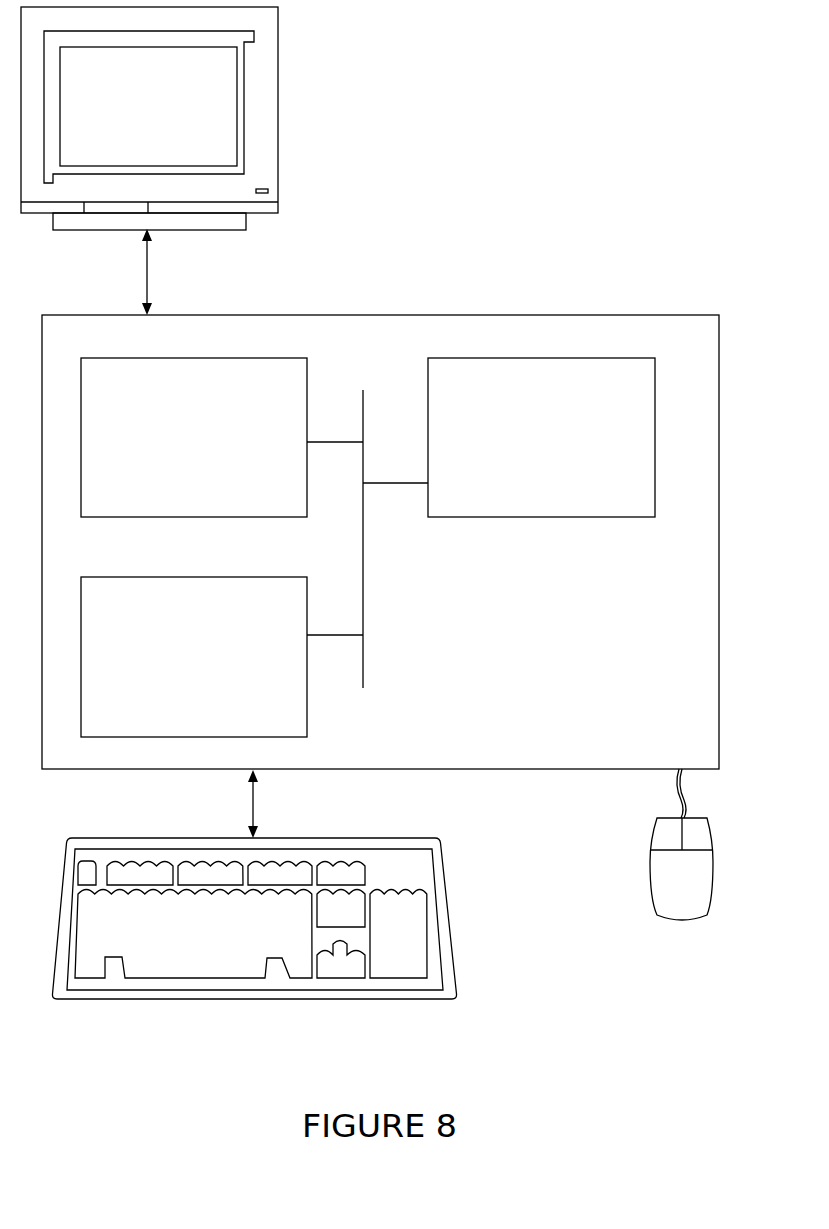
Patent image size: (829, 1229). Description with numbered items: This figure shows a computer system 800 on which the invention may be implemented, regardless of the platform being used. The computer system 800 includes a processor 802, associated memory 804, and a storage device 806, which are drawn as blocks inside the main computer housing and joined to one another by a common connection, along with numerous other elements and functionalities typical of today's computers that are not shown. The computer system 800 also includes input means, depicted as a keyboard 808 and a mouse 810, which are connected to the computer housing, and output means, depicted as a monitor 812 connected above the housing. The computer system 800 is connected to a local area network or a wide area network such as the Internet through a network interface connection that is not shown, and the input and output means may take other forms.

The computer system 800 is at (493, 179).
The processor 802 is at (548, 447).
The memory 804 is at (214, 447).
The storage device 806 is at (212, 669).
The keyboard 808 is at (211, 944).
The mouse 810 is at (702, 892).
The monitor 812 is at (166, 122).